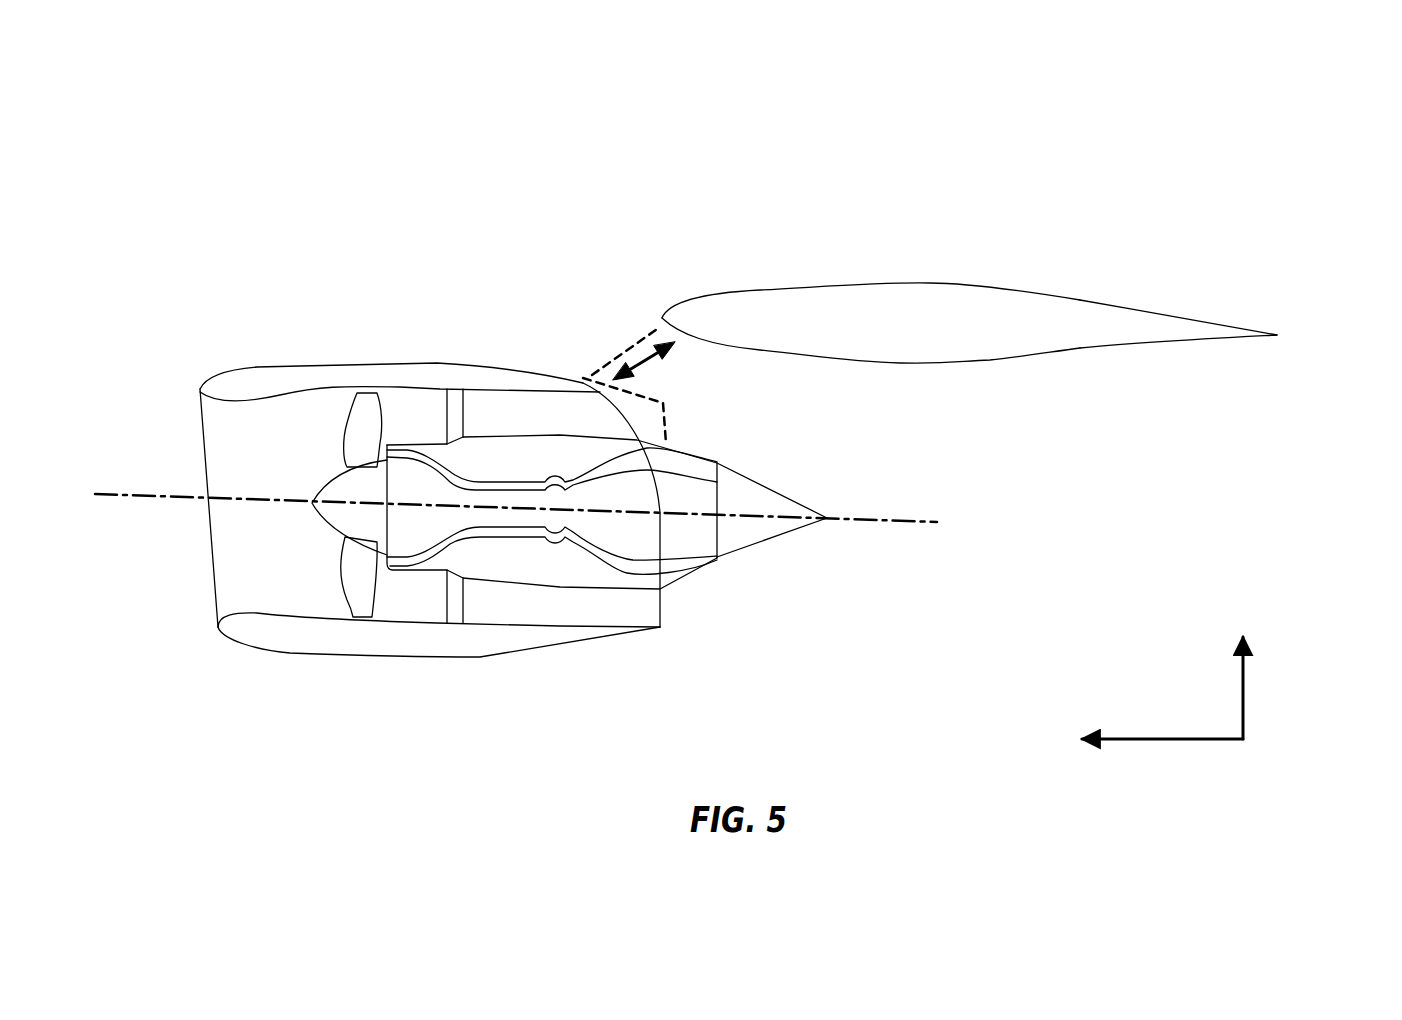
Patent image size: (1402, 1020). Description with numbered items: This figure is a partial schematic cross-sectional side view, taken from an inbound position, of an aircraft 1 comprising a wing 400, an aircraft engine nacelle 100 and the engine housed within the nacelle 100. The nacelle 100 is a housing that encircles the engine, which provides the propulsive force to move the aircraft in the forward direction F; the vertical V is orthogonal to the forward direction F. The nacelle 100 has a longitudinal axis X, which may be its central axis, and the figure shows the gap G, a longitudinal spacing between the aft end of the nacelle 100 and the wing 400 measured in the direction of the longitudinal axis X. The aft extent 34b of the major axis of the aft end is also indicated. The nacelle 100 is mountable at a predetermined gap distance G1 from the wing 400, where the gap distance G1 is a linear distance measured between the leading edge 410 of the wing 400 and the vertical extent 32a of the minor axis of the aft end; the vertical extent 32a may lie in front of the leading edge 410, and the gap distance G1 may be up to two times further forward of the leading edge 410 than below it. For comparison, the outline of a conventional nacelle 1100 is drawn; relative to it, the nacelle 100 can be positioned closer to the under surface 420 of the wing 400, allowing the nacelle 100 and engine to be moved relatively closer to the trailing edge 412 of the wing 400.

The aircraft 1 is at (1132, 176).
The aircraft engine nacelle 100 is at (250, 647).
The vertical extent of the minor axis 32a is at (583, 383).
The aft extent 34b is at (658, 513).
The wing 400 is at (945, 339).
The leading edge 410 is at (660, 322).
The trailing edge 412 is at (1277, 336).
The under surface 420 is at (913, 365).
The conventional nacelle 1100 is at (676, 427).
The gap G is at (650, 365).
The gap distance G1 is at (622, 352).
The longitudinal axis X is at (930, 522).
The forward direction F is at (1163, 738).
The vertical V is at (1245, 687).